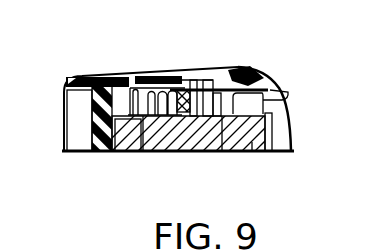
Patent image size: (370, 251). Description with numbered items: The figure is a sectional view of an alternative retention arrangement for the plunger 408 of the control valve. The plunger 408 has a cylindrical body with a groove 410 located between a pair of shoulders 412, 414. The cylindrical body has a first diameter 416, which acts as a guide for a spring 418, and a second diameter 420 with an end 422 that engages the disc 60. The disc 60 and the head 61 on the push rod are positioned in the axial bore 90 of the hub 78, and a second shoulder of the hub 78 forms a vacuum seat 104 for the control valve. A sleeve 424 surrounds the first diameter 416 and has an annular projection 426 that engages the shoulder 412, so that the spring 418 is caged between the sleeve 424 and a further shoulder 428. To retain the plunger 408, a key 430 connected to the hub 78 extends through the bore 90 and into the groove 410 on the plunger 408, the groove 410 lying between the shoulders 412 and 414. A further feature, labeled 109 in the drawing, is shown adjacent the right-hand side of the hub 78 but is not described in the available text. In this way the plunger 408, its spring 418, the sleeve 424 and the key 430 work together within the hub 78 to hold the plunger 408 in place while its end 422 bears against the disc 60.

The disc 60 is at (170, 165).
The head 61 is at (131, 109).
The hub 78 is at (100, 78).
The axial bore 90 is at (289, 101).
The vacuum seat 104 is at (286, 91).
The slot 109 is at (305, 128).
The plunger 408 is at (252, 148).
The groove 410 is at (218, 152).
The shoulder 412 is at (196, 152).
The shoulder 414 is at (242, 70).
The first diameter 416 is at (191, 78).
The spring 418 is at (150, 77).
The second diameter 420 is at (122, 110).
The end 422 is at (114, 157).
The sleeve 424 is at (195, 73).
The annular projection 426 is at (163, 152).
The shoulder 428 is at (137, 77).
The key 430 is at (212, 72).